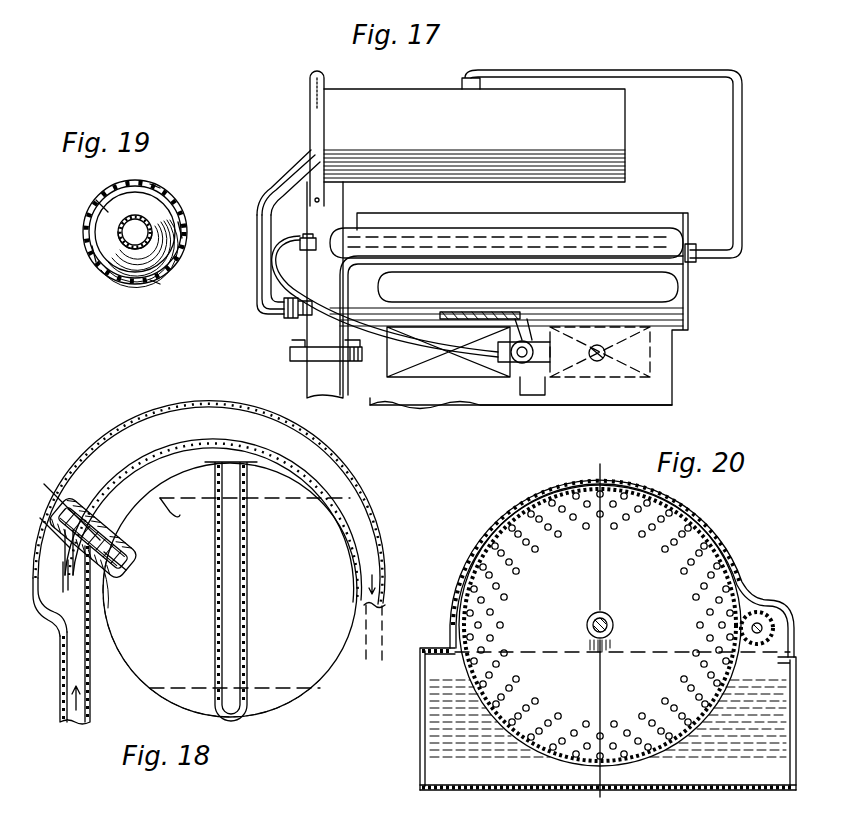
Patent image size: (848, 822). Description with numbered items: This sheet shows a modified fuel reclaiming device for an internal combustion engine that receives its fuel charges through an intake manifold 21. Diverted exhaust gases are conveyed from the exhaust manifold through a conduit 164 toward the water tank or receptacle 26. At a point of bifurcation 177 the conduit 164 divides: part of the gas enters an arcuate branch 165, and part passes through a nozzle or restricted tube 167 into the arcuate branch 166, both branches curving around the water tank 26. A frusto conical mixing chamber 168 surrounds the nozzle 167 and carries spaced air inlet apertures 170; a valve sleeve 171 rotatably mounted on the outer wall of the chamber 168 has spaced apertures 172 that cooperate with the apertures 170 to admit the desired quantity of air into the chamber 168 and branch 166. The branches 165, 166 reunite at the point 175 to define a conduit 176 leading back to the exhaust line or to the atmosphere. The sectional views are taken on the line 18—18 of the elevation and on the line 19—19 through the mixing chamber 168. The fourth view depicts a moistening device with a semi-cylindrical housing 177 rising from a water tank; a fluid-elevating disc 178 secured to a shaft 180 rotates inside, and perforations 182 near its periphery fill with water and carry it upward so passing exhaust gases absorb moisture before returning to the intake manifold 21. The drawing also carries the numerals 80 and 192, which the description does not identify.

In FIG. 17, the line 18— 18 is at (330, 71).
In FIG. 18, the line 19— 19 is at (85, 534).
In FIG. 20, the intake manifold 21 is at (618, 467).
In FIG. 17, the water tank or receptacle 26 is at (630, 155).
In FIG. 18, the water tank or receptacle 26 is at (230, 590).
In FIG. 17, the pipe 80 is at (746, 150).
In FIG. 17, the conduit 164 is at (284, 318).
In FIG. 18, the conduit 164 is at (66, 660).
In FIG. 18, the arcuate branch 165 is at (84, 460).
In FIG. 18, the arcuate branch 166 is at (183, 511).
In FIG. 18, the nozzle or restricted tube 167 is at (112, 582).
In FIG. 19, the frusto conical mixing chamber 168 is at (180, 258).
In FIG. 18, the frusto conical mixing chamber 168 is at (135, 548).
In FIG. 19, the air inlet apertures 170 is at (160, 190).
In FIG. 18, the air inlet apertures 170 is at (128, 520).
In FIG. 19, the valve sleeve 171 is at (94, 206).
In FIG. 18, the valve sleeve 171 is at (60, 486).
In FIG. 19, the spaced apertures 172 is at (124, 188).
In FIG. 18, the point of reunion 175 is at (370, 485).
In FIG. 17, the conduit 176 is at (327, 192).
In FIG. 18, the conduit 176 is at (380, 558).
In FIG. 18, the point of bifurcation / semi-cylindrical housing 177 is at (60, 604).
In FIG. 20, the point of bifurcation / semi-cylindrical housing 177 is at (718, 534).
In FIG. 18, the fluid-elevating disc 178 is at (232, 560).
In FIG. 20, the fluid-elevating disc 178 is at (722, 558).
In FIG. 20, the shaft 180 is at (615, 628).
In FIG. 20, the perforations 182 is at (492, 540).
In FIG. 20, the trough 192 is at (418, 778).